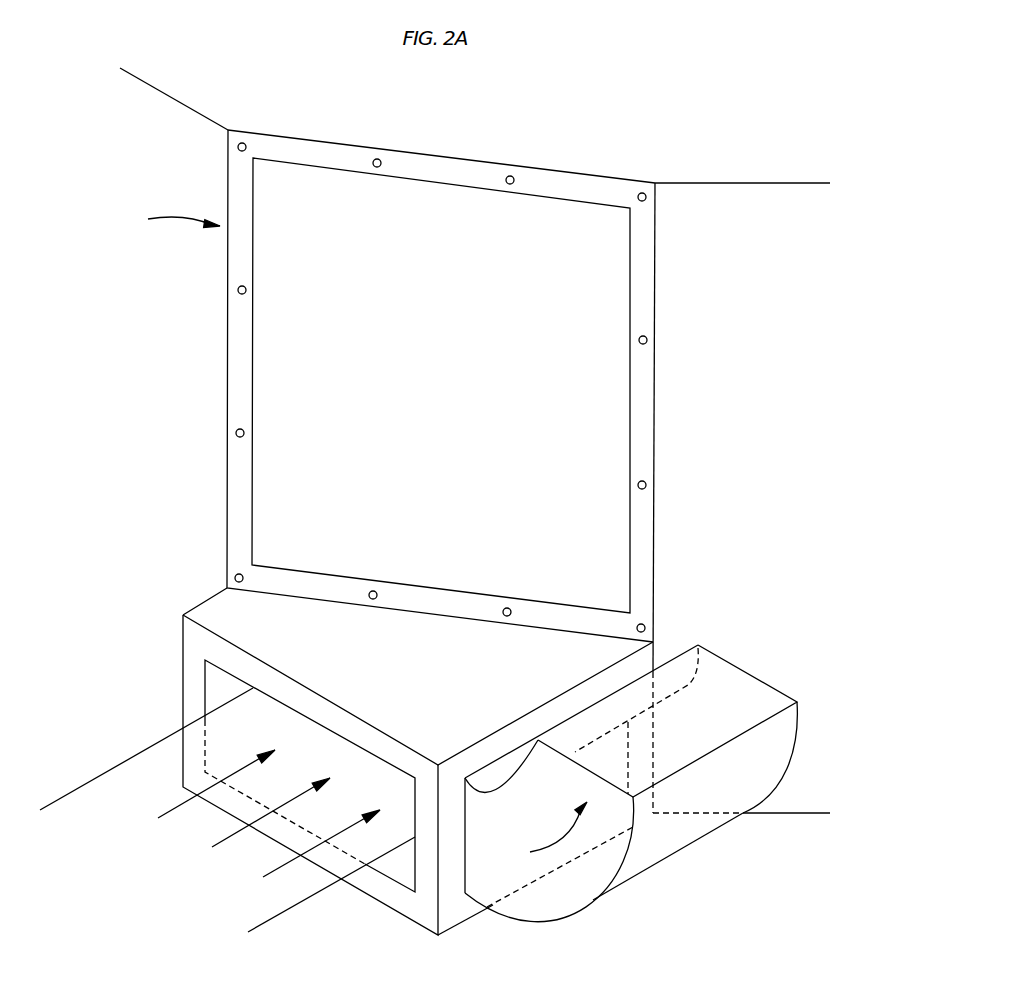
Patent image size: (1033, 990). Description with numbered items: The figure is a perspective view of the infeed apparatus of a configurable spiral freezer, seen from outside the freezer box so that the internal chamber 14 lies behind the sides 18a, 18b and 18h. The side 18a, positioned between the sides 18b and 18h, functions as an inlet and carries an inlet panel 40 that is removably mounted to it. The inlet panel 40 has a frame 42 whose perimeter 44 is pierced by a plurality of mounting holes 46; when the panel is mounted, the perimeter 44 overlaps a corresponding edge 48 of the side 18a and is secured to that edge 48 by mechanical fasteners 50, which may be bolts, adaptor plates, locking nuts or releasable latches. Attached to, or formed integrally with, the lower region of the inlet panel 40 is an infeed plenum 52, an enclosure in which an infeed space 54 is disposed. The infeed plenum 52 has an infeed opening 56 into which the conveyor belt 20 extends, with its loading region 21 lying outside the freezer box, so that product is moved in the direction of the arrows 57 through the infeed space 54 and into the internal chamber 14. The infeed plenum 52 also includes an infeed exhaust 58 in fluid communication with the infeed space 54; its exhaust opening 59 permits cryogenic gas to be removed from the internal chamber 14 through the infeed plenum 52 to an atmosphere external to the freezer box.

The internal chamber 14 is at (475, 439).
The side 18a is at (441, 153).
The side 18b is at (776, 230).
The side 18h is at (181, 101).
The conveyor belt 20 is at (277, 913).
The loading region 21 is at (97, 815).
The inlet panel 40 is at (416, 392).
The frame 42 is at (172, 222).
The perimeter 44 is at (647, 299).
The mounting holes 46 is at (236, 290).
The edge 48 is at (230, 362).
The mechanical fasteners 50 is at (645, 202).
The infeed plenum 52 is at (430, 767).
The infeed space 54 is at (203, 612).
The infeed opening 56 is at (392, 868).
The arrows 57 is at (170, 807).
The infeed exhaust 58 is at (678, 850).
The exhaust opening 59 is at (752, 688).